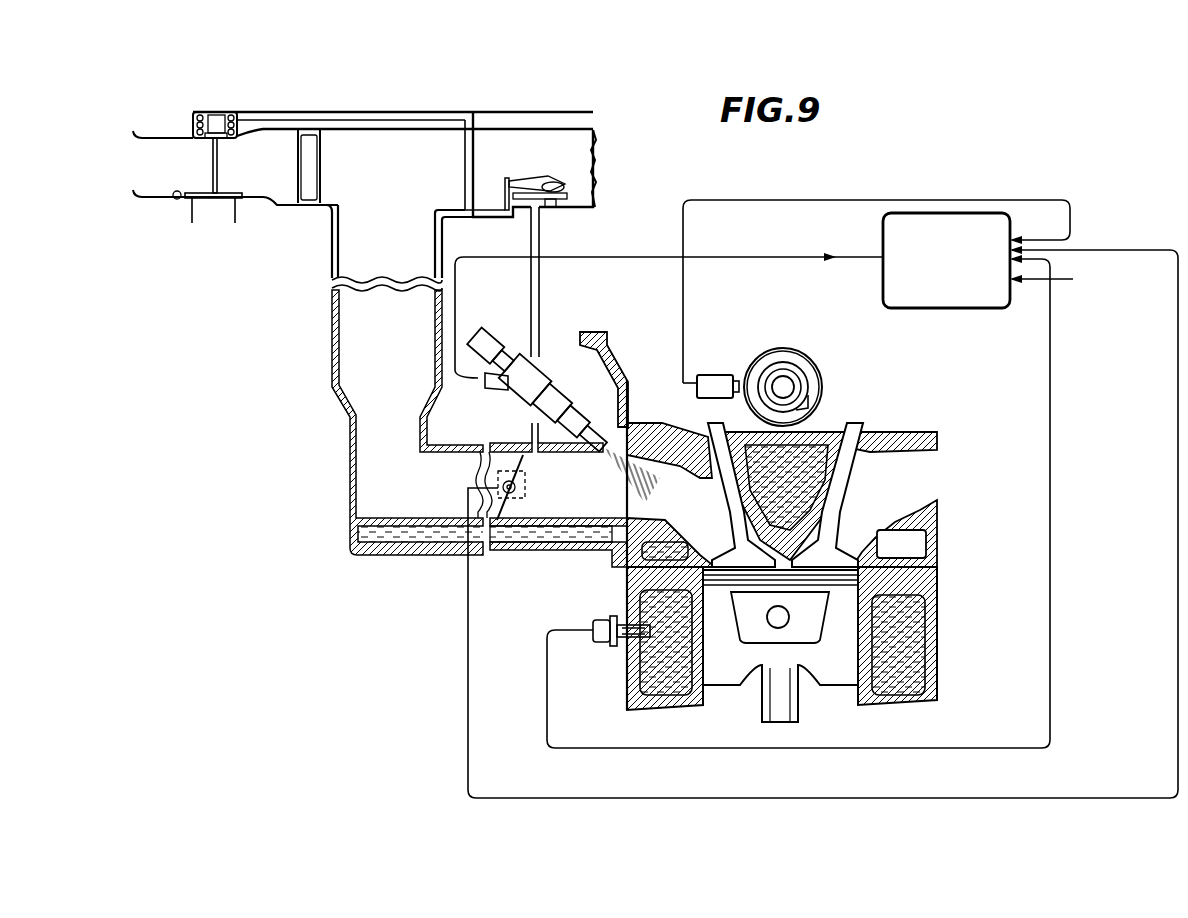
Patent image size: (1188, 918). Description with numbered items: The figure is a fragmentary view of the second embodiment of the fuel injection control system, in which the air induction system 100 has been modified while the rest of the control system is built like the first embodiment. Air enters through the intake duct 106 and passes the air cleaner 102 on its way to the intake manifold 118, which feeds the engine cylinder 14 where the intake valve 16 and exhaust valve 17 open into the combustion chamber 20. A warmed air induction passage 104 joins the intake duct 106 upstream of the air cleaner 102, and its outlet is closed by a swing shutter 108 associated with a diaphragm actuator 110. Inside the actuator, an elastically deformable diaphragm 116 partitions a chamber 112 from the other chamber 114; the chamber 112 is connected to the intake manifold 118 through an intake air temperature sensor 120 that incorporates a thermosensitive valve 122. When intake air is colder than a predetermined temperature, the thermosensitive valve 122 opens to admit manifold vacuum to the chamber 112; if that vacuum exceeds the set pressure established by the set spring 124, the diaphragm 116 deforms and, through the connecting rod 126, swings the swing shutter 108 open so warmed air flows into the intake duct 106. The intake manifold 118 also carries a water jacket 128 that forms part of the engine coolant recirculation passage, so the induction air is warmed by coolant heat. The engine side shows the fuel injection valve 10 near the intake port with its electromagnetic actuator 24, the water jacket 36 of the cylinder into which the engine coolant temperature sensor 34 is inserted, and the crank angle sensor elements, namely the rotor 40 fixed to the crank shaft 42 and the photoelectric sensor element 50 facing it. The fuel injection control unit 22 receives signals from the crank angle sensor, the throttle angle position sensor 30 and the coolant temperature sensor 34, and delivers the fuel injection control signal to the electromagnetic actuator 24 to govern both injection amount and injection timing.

The fuel injection valve 10 is at (563, 400).
The engine cylinder 14 is at (930, 625).
The intake valve 16 is at (720, 560).
The exhaust valve 17 is at (833, 530).
The combustion chamber 20 is at (930, 546).
The fuel injection control unit 22 is at (978, 310).
The electromagnetic actuator 24 is at (500, 390).
The throttle angle position sensor 30 is at (526, 484).
The engine coolant temperature sensor 34 is at (625, 646).
The water jacket 36 is at (648, 604).
The rotor 40 is at (797, 349).
The crank shaft 42 is at (786, 388).
The photoelectric sensor element 50 is at (716, 376).
The air induction system 100 is at (355, 478).
The air cleaner 102 is at (318, 165).
The warmed air induction passage 104 is at (218, 215).
The intake duct 106 is at (157, 145).
The swing shutter 108 is at (232, 200).
The diaphragm actuator 110 is at (222, 113).
The chamber 112 is at (238, 116).
The other chamber 114 is at (199, 133).
The diaphragm 116 is at (242, 130).
The intake manifold 118 is at (532, 527).
The intake air temperature sensor 120 is at (552, 184).
The thermosensitive valve 122 is at (514, 178).
The set spring 124 is at (200, 114).
The connecting rod 126 is at (210, 167).
The water jacket 128 is at (418, 540).